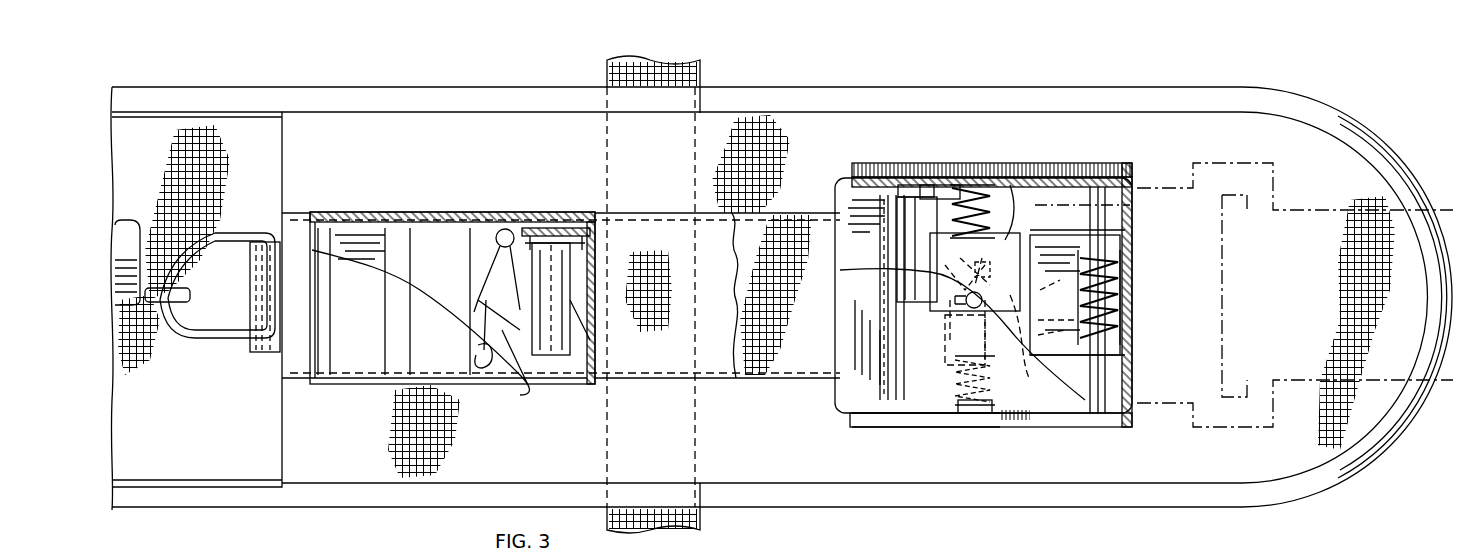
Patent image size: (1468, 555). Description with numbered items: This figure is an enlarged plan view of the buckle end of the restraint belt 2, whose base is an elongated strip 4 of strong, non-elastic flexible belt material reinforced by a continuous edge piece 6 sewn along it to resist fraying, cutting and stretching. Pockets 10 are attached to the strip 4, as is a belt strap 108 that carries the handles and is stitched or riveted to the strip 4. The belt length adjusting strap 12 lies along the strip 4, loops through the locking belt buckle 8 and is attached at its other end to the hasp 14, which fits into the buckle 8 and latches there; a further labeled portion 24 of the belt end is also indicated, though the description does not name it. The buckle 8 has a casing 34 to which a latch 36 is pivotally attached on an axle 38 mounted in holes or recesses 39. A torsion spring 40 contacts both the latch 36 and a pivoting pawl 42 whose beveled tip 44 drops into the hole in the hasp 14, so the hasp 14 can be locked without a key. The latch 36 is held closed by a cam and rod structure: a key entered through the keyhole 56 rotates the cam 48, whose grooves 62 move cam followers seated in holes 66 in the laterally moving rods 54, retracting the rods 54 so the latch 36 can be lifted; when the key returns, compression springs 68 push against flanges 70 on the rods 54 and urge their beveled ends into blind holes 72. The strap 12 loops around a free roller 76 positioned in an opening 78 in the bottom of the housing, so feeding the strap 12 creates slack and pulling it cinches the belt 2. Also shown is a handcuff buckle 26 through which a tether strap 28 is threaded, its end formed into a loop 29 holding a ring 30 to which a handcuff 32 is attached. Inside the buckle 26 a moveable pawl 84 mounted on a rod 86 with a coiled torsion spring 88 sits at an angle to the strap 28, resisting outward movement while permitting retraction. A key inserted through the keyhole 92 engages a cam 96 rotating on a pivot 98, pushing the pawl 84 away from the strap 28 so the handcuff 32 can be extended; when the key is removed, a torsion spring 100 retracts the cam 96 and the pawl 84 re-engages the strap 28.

The restraint belt 2 is at (935, 82).
The elongated strip 4 is at (430, 128).
The continuous edge piece 6 is at (1122, 98).
The locking belt buckle 8 is at (1050, 427).
The pockets 10 is at (240, 468).
The belt length adjusting strap 12 is at (757, 375).
The hasp 14 is at (1216, 160).
The outer wall 24 is at (1325, 452).
The handcuff buckle 26 is at (362, 383).
The tether strap 28 is at (656, 343).
The loop 29 is at (247, 307).
The ring 30 is at (225, 235).
The handcuff 32 is at (128, 225).
The casing 34 is at (1065, 165).
The latch 36 is at (838, 200).
The axle 38 is at (1105, 218).
The holes or recesses 39 is at (1100, 170).
The torsion spring 40 is at (1128, 298).
The pivoting pawl 42 is at (1052, 234).
The beveled tip 44 is at (1030, 305).
The cam 48 is at (900, 311).
The rods 54 is at (975, 205).
The keyhole 56 is at (958, 300).
The grooves 62 is at (935, 225).
The holes 66 is at (975, 299).
The compression springs 68 is at (1018, 182).
The flanges 70 is at (945, 195).
The blind holes 72 is at (985, 165).
The free roller 76 is at (912, 193).
The opening 78 is at (882, 422).
The moveable pawl 84 is at (563, 287).
The rod 86 is at (596, 340).
The torsion spring 88 is at (549, 228).
The keyhole 92 is at (476, 352).
The cam 96 is at (522, 386).
The pivot 98 is at (503, 230).
The torsion spring 100 is at (483, 272).
The belt strap 108 is at (605, 68).